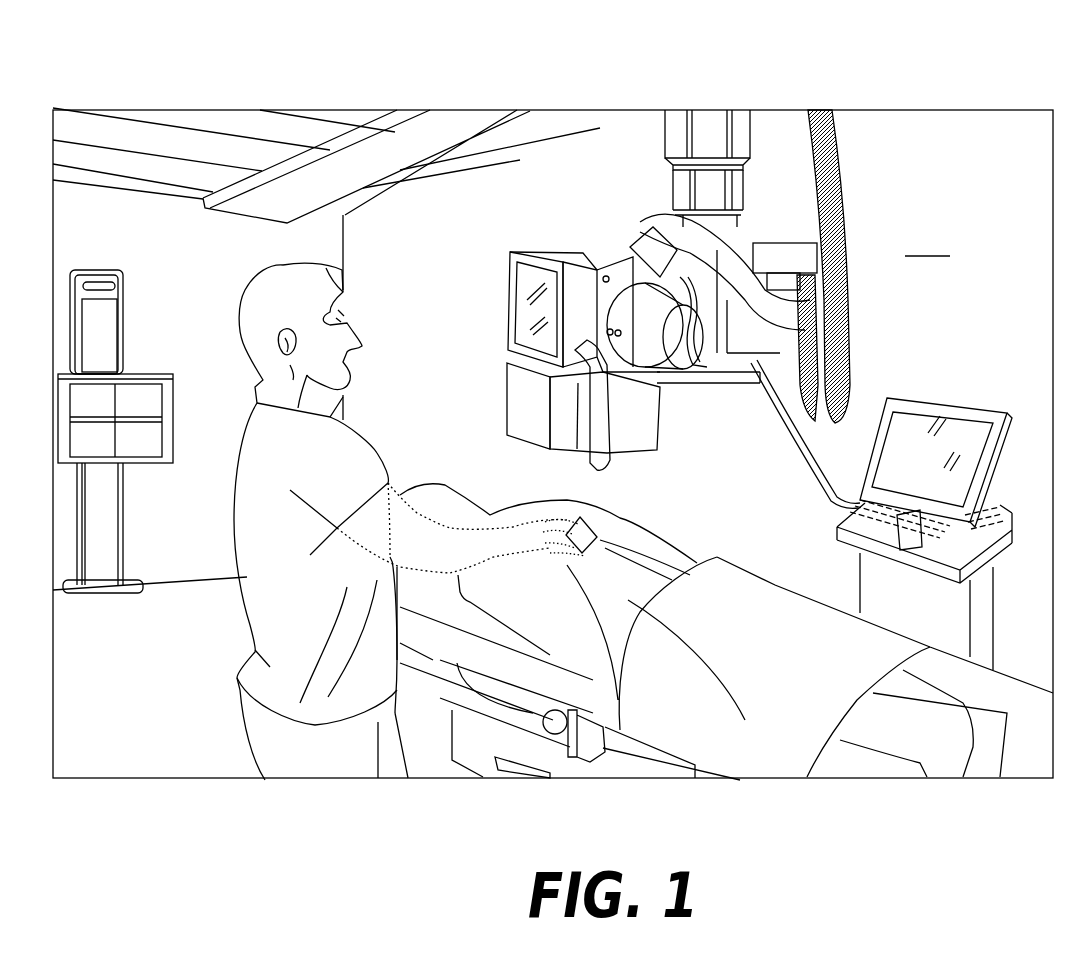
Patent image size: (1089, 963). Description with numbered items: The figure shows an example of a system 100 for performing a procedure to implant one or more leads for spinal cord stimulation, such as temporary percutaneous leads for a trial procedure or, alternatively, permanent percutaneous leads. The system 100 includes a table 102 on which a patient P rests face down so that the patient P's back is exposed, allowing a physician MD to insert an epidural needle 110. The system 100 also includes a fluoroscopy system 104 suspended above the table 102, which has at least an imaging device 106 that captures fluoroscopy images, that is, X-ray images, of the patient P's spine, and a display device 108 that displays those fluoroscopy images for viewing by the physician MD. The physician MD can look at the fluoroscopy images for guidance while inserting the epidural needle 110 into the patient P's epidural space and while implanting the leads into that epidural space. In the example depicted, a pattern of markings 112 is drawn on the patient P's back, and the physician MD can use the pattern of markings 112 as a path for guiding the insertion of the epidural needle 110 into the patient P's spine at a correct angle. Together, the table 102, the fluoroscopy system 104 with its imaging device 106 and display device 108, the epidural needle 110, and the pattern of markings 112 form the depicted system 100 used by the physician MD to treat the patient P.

The system 100 is at (553, 443).
The table 102 is at (465, 615).
The fluoroscopy system 104 is at (612, 190).
The imaging device 106 is at (640, 425).
The display device 108 is at (508, 302).
The epidural needle 110 is at (597, 541).
The pattern of markings 112 is at (620, 730).
The physician MD is at (327, 465).
The patient P is at (745, 720).